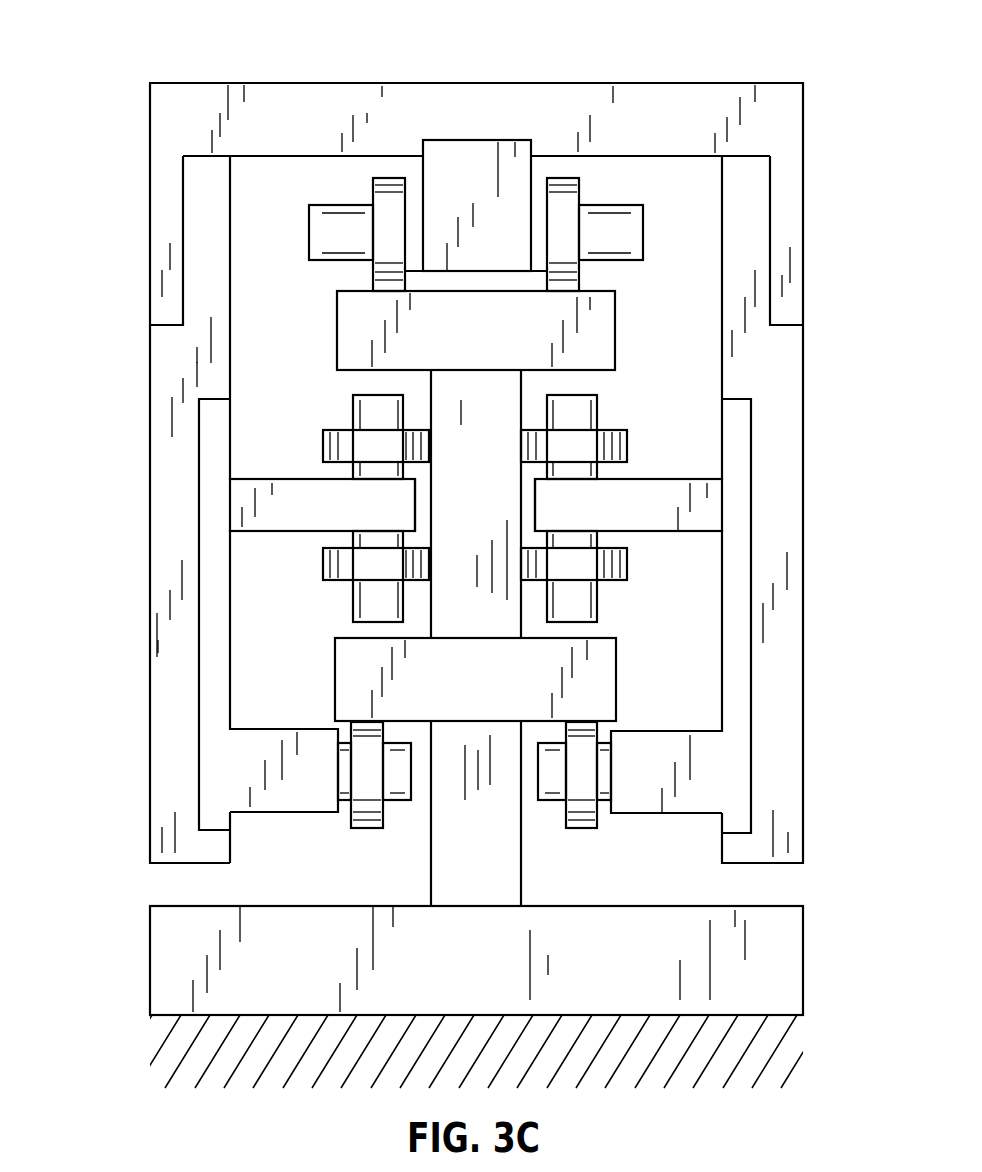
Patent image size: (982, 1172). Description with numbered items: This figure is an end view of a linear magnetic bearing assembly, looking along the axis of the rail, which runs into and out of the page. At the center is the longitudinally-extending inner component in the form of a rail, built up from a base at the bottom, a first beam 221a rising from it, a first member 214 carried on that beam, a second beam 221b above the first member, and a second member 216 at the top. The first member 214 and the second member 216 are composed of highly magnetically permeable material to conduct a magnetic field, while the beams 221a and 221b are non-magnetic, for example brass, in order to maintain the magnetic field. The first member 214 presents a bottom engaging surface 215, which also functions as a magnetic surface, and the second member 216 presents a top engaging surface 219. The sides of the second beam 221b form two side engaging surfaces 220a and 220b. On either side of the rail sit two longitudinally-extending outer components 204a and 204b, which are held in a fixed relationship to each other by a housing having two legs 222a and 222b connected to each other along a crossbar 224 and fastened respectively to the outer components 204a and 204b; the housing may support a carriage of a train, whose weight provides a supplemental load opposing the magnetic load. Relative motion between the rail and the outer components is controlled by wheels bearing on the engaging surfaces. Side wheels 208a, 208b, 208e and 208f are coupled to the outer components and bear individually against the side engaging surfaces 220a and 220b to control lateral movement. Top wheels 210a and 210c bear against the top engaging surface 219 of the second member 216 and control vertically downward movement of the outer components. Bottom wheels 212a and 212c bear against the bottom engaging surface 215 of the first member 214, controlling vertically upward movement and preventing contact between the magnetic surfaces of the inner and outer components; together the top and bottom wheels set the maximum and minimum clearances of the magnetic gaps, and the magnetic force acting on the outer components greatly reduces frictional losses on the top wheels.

The outer component 204a is at (214, 676).
The outer component 204b is at (735, 678).
The side wheel 208a is at (322, 441).
The side wheel 208b is at (322, 565).
The side wheel 208e is at (630, 441).
The side wheel 208f is at (630, 565).
The top wheel 210a is at (390, 178).
The top wheel 210c is at (562, 178).
The bottom wheel 212a is at (367, 828).
The bottom wheel 212c is at (582, 828).
The first member 214 is at (498, 691).
The bottom engaging surface 215 is at (427, 724).
The second member 216 is at (337, 327).
The top engaging surface 219 is at (487, 282).
The side engaging surface 220a is at (429, 499).
The side engaging surface 220b is at (524, 499).
The first beam 221a is at (504, 844).
The second beam 221b is at (504, 509).
The housing leg 222a is at (157, 443).
The housing leg 222b is at (795, 445).
The crossbar 224 is at (481, 100).